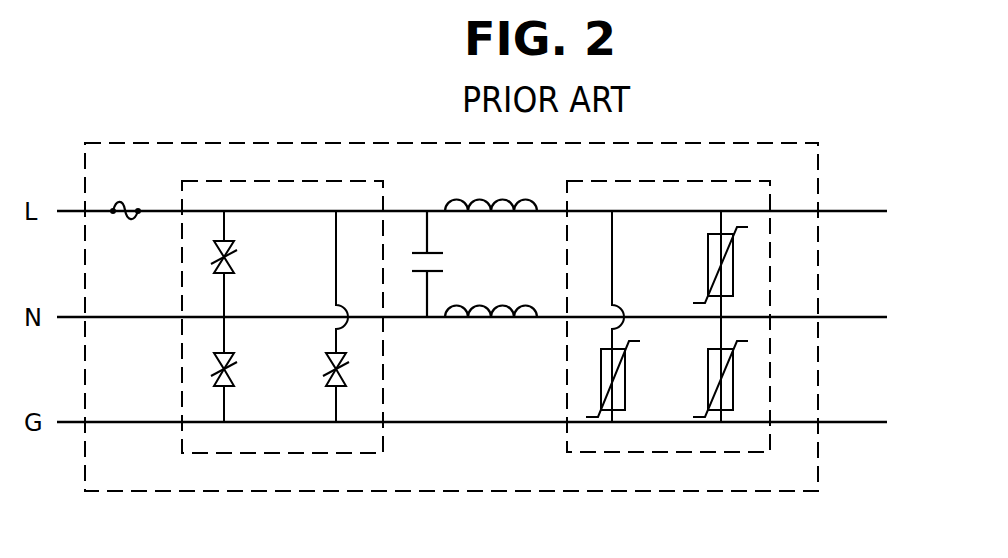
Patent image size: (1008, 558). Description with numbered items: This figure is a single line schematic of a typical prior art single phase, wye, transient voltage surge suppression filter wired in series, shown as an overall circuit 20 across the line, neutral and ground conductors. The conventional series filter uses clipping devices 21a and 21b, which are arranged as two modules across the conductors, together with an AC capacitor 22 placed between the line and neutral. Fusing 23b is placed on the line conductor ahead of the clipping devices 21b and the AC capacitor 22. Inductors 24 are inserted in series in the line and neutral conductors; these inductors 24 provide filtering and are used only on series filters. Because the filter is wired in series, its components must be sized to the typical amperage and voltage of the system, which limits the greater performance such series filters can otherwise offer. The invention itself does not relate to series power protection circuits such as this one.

The prior art surge suppressor circuit 20 is at (756, 143).
The clipping device 21a is at (692, 453).
The clipping device 21b is at (290, 453).
The AC capacitor 22 is at (413, 253).
The fusing 23b is at (113, 208).
The inductors 24 is at (489, 204).